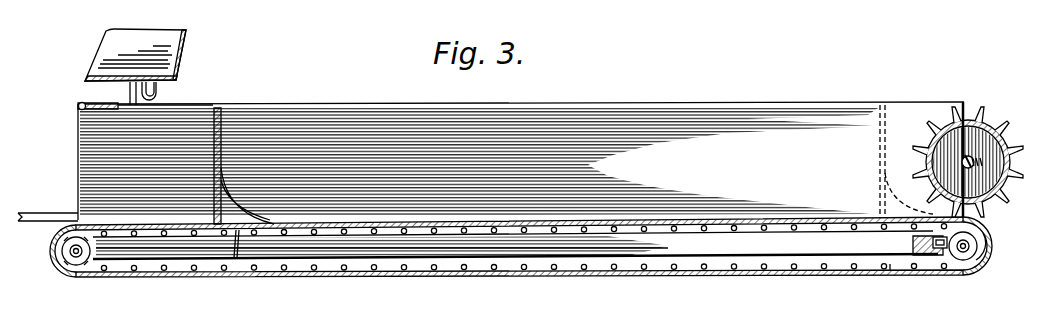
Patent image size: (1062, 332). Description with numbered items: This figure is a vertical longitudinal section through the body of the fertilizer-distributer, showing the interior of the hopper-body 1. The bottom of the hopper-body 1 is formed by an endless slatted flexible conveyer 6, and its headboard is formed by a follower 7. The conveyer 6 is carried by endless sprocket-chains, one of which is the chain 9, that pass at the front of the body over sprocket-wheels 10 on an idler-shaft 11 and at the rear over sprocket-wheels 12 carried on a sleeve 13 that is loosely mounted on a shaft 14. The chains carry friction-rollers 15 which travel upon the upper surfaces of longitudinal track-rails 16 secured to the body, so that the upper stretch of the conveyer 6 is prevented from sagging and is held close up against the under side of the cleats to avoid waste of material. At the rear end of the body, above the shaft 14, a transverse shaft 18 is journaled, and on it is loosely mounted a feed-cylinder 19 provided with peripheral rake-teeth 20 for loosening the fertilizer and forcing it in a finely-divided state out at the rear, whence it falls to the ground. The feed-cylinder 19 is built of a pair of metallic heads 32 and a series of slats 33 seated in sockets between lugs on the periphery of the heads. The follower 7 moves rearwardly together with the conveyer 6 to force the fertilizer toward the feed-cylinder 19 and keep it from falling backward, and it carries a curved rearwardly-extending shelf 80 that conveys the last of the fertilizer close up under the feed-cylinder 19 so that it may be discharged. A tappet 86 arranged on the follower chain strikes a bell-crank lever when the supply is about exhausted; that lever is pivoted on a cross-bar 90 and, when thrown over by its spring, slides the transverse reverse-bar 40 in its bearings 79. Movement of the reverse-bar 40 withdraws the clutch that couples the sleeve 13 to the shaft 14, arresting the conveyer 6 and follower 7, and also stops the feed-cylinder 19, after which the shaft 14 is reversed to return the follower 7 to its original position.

The hopper-body 1 is at (578, 120).
The endless slatted flexible conveyer 6 is at (506, 260).
The follower 7 is at (213, 135).
The sprocket-chain 9 is at (470, 262).
The sprocket-wheel 10 is at (52, 254).
The idler-shaft 11 is at (50, 238).
The sprocket-wheel 12 is at (990, 243).
The sleeve 13 is at (985, 256).
The shaft 14 is at (965, 236).
The friction-rollers 15 is at (162, 266).
The track-rails 16 is at (428, 252).
The transverse shaft 18 is at (968, 148).
The feed-cylinder 19 is at (984, 135).
The rake-teeth 20 is at (962, 148).
The heads 32 is at (985, 160).
The slats 33 is at (918, 150).
The reverse-bar 40 is at (932, 241).
The bearings 79 is at (918, 248).
The shelf 80 is at (238, 198).
The tappet 86 is at (228, 248).
The cross-bar 90 is at (882, 262).